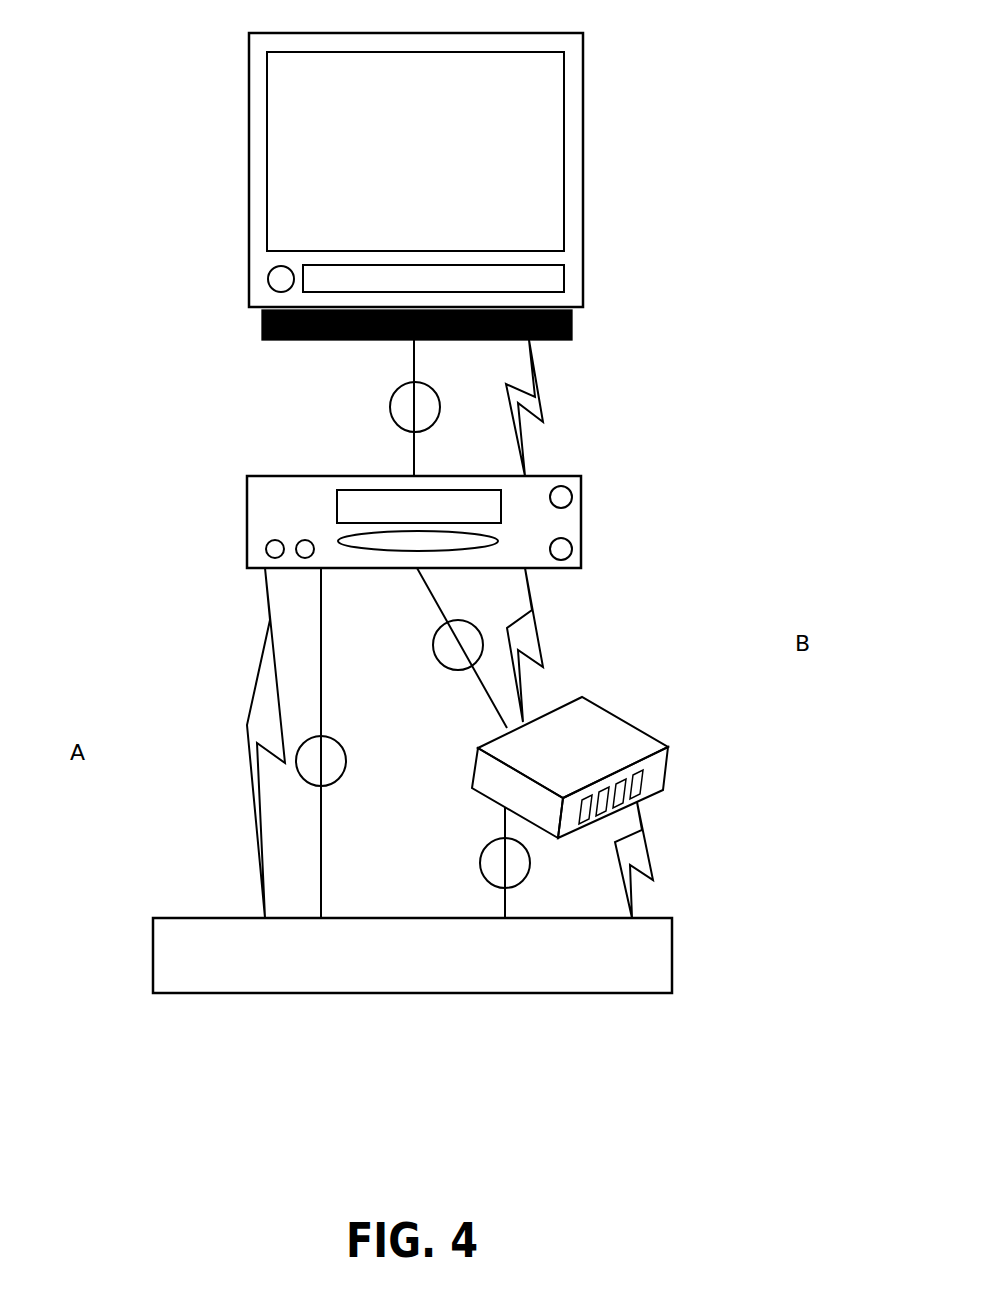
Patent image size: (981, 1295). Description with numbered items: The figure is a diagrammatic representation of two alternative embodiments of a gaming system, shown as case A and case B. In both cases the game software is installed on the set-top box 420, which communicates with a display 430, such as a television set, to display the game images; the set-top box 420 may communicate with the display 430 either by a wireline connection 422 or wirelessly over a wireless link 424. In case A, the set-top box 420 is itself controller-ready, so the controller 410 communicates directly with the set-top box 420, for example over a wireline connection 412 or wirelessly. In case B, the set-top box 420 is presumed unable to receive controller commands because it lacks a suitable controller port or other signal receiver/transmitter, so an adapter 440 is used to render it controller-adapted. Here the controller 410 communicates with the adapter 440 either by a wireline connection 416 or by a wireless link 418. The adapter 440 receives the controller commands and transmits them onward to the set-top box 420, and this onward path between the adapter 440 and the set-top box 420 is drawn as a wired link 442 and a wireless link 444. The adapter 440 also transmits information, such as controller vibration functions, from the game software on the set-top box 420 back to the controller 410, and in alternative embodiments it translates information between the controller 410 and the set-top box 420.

The controller 410 is at (153, 955).
The wireline connection 412 is at (247, 735).
The wireline connection 416 is at (480, 860).
The wireless connection 418 is at (653, 851).
The set-top box 420 is at (581, 513).
The wireline connection 422 is at (390, 406).
The wireless connection 424 is at (541, 402).
The display 430 is at (583, 70).
The adapter 440 is at (668, 747).
The wired link between game console and device 442 is at (435, 653).
The wireless link between game console and device 444 is at (541, 638).